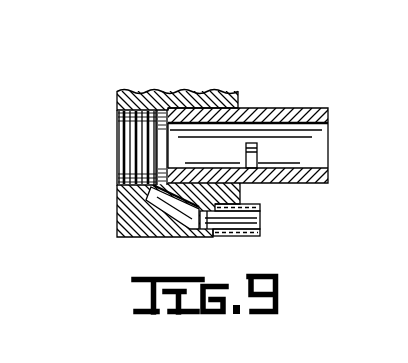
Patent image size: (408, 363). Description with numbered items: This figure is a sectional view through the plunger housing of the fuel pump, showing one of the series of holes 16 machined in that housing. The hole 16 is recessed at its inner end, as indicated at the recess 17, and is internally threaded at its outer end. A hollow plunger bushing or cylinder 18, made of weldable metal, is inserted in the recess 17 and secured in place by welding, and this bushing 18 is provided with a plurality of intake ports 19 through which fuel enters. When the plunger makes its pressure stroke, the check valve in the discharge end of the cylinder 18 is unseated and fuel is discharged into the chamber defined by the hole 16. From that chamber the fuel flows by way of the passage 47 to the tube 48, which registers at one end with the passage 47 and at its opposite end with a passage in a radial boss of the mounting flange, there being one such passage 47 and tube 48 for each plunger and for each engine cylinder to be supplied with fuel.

The hole 16 is at (119, 151).
The recess 17 is at (160, 110).
The plunger bushing 18 is at (289, 112).
The intake port 19 is at (252, 156).
The passage 47 is at (180, 204).
The tube 48 is at (249, 235).